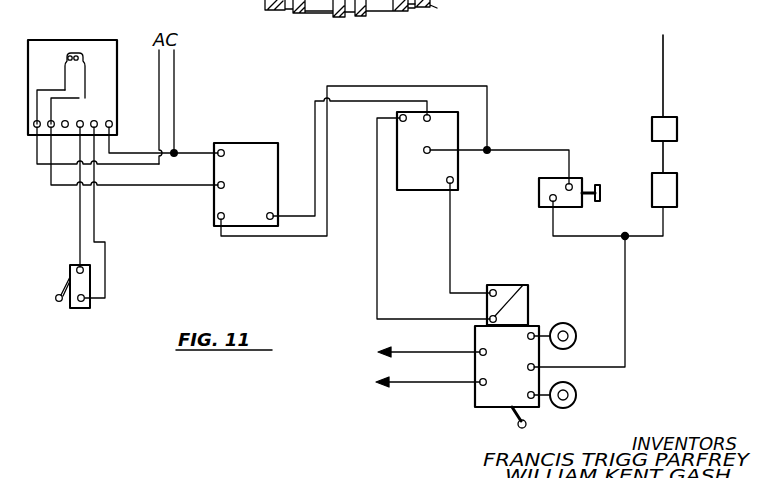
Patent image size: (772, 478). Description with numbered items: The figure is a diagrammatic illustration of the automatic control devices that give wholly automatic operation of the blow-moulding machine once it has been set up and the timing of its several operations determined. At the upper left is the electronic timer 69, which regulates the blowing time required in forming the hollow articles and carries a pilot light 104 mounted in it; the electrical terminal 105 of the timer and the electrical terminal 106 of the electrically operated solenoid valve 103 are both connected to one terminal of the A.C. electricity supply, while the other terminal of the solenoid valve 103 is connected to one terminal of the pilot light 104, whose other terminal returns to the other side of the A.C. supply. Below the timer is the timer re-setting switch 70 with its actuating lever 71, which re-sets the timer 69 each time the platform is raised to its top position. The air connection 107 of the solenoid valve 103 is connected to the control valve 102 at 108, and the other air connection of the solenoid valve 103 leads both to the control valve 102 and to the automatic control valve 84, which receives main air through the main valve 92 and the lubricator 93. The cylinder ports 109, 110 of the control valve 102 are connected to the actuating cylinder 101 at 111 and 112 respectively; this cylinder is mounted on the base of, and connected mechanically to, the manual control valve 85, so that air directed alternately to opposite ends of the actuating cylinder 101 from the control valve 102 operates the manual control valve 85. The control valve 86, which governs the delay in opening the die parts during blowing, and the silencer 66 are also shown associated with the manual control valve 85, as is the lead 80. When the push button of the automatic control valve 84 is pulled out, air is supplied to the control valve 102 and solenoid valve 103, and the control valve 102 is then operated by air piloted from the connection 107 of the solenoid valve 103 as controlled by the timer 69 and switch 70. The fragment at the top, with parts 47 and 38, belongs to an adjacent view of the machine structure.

The fragment of mechanical part 38 is at (432, 7).
The fragment of mechanical part 47 is at (318, 8).
The silencer 66 is at (571, 329).
The electronic timer 69 is at (91, 69).
The switch 70 is at (81, 311).
The actuating lever 71 is at (59, 302).
The output lead 80 is at (413, 382).
The automatic control valve 84 is at (581, 181).
The manual control valve 85 is at (485, 394).
The control valve 86 is at (416, 351).
The main valve 92 is at (654, 128).
The lubricator 93 is at (660, 181).
The actuating cylinder 101 is at (533, 290).
The control valve 102 is at (409, 162).
The solenoid valve 103 is at (254, 190).
The pilot light 104 is at (73, 52).
The electrical terminal 105 is at (110, 122).
The electrical terminal 106 is at (223, 149).
The air connection 107 is at (270, 221).
The connection point 108 is at (430, 117).
The cylinder port 109 is at (449, 184).
The cylinder port 110 is at (399, 117).
The connection 111 is at (493, 289).
The connection 112 is at (529, 277).